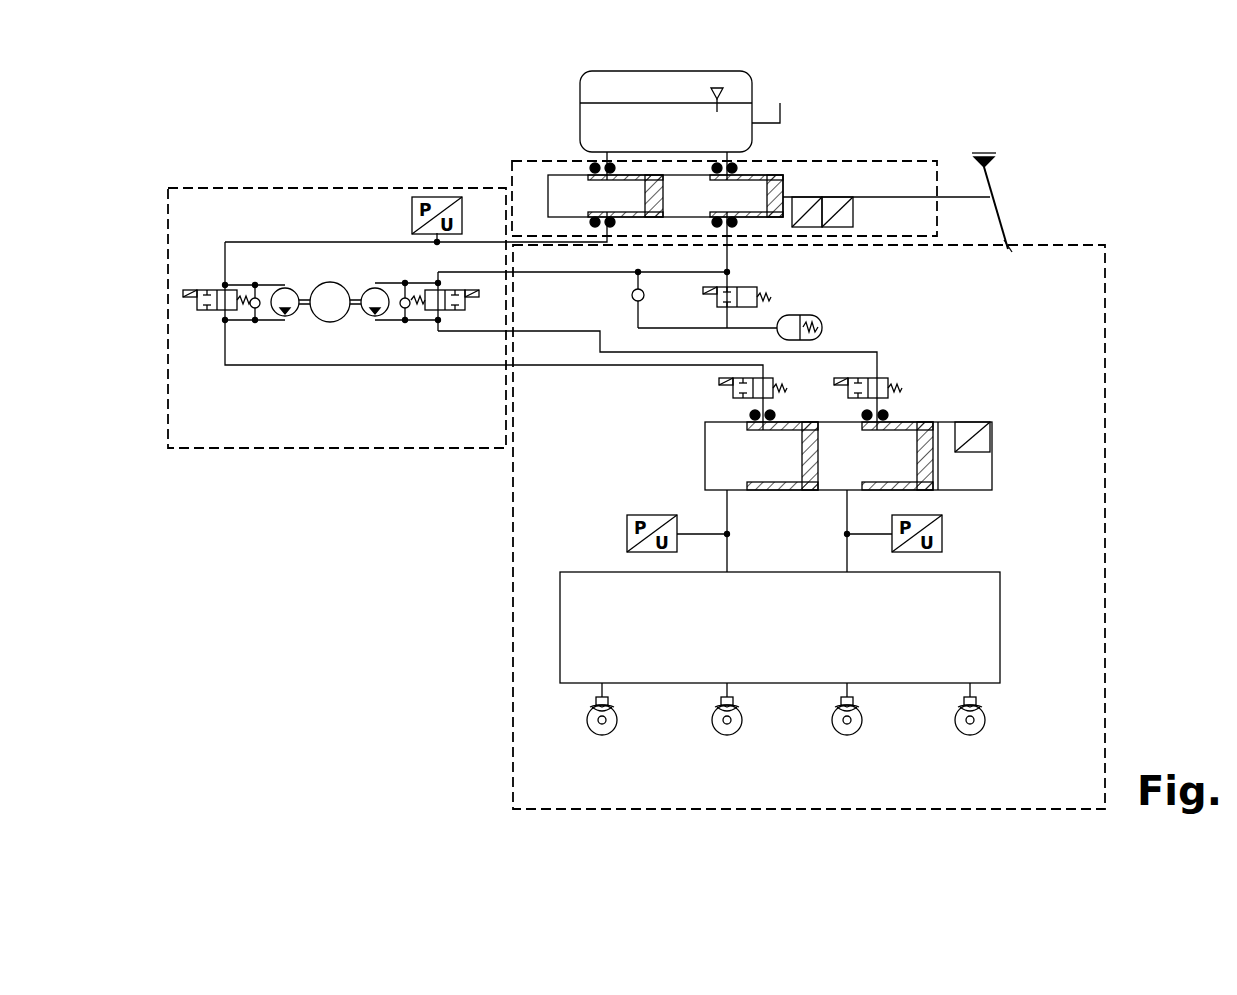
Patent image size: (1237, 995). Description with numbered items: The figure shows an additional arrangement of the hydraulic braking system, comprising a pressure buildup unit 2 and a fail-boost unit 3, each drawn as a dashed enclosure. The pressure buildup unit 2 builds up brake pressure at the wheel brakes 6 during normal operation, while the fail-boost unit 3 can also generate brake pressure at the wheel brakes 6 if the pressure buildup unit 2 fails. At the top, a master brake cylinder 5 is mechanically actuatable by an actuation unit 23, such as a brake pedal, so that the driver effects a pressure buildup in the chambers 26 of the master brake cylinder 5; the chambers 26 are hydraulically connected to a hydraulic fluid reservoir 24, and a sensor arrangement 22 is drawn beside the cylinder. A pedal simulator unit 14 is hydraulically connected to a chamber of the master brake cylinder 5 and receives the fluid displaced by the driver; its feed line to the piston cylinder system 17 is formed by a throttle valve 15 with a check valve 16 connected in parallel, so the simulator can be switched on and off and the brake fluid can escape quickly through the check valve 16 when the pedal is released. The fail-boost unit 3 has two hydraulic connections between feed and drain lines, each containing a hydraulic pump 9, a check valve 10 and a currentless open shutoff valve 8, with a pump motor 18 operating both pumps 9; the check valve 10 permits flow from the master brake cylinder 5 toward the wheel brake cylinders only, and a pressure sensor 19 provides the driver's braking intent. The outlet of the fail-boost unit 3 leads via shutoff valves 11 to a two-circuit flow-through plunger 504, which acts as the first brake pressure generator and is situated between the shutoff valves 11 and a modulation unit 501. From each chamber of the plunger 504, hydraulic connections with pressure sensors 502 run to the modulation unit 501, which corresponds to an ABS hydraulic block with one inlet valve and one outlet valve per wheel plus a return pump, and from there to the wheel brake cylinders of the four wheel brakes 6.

The pressure buildup unit 2 is at (470, 748).
The fail-boost unit 3 is at (252, 462).
The master brake cylinder 5 is at (525, 116).
The wheel brakes 6 is at (602, 735).
The shutoff valve 8 is at (183, 303).
The hydraulic pump 9 is at (297, 314).
The check valve 10 is at (250, 298).
The shutoff valves 11 is at (722, 387).
The pedal simulator unit 14 is at (870, 328).
The throttle valve 15 is at (752, 287).
The check valve 16 is at (632, 295).
The piston cylinder system 17 is at (808, 315).
The pump motor 18 is at (328, 282).
The pressure sensor 19 is at (412, 214).
The pedal travel sensor 22 is at (838, 197).
The actuation unit 23 is at (985, 152).
The hydraulic fluid reservoir 24 is at (680, 71).
The chambers 26 is at (577, 195).
The modulation unit 501 is at (1000, 628).
The pressure sensors 502 is at (627, 534).
The flow-through plunger 504 is at (943, 422).